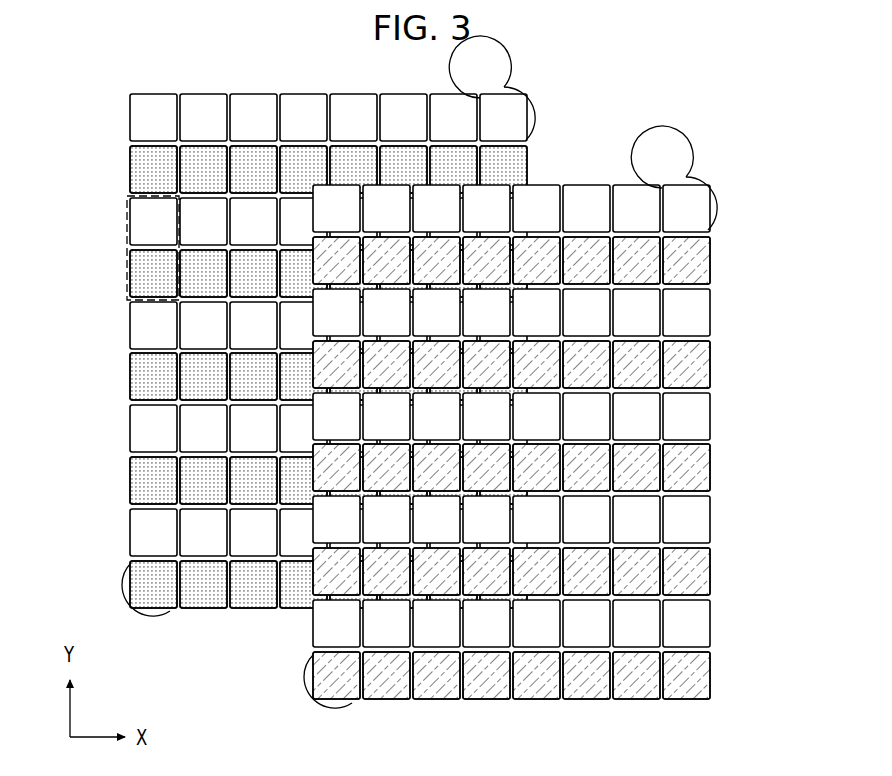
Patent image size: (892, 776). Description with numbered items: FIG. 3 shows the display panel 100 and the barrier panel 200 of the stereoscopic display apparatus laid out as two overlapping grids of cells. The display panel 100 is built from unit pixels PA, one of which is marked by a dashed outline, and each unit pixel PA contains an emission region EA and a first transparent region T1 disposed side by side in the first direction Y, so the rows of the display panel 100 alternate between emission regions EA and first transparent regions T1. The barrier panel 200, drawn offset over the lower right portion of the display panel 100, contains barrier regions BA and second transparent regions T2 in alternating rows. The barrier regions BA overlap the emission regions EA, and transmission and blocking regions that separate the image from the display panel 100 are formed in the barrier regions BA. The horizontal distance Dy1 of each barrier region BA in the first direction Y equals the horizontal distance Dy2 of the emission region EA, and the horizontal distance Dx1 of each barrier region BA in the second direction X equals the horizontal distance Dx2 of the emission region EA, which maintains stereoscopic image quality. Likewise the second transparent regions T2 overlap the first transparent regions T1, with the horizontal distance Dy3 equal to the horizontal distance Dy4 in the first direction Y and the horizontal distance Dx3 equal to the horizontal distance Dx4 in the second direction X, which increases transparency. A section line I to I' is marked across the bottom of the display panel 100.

The display panel 100 is at (285, 351).
The barrier panel 200 is at (559, 442).
The unit pixel PA is at (128, 281).
The first transparent region T1 is at (328, 325).
The emission region EA is at (112, 188).
The second transparent region T2 is at (511, 416).
The barrier region BA is at (511, 468).
The horizontal distance of barrier region in second direction Dx1 is at (328, 706).
The horizontal distance of barrier region in first direction Dy1 is at (295, 673).
The horizontal distance of emission region in second direction Dx2 is at (146, 615).
The horizontal distance of emission region in first direction Dy2 is at (113, 580).
The horizontal distance of second transparent region in second direction Dx3 is at (717, 203).
The horizontal distance of second transparent region in first direction Dy3 is at (665, 157).
The horizontal distance of first transparent region in second direction Dx4 is at (535, 113).
The horizontal distance of first transparent region in first direction Dy4 is at (482, 67).
The section line I is at (243, 640).
The section line I' is at (263, 640).